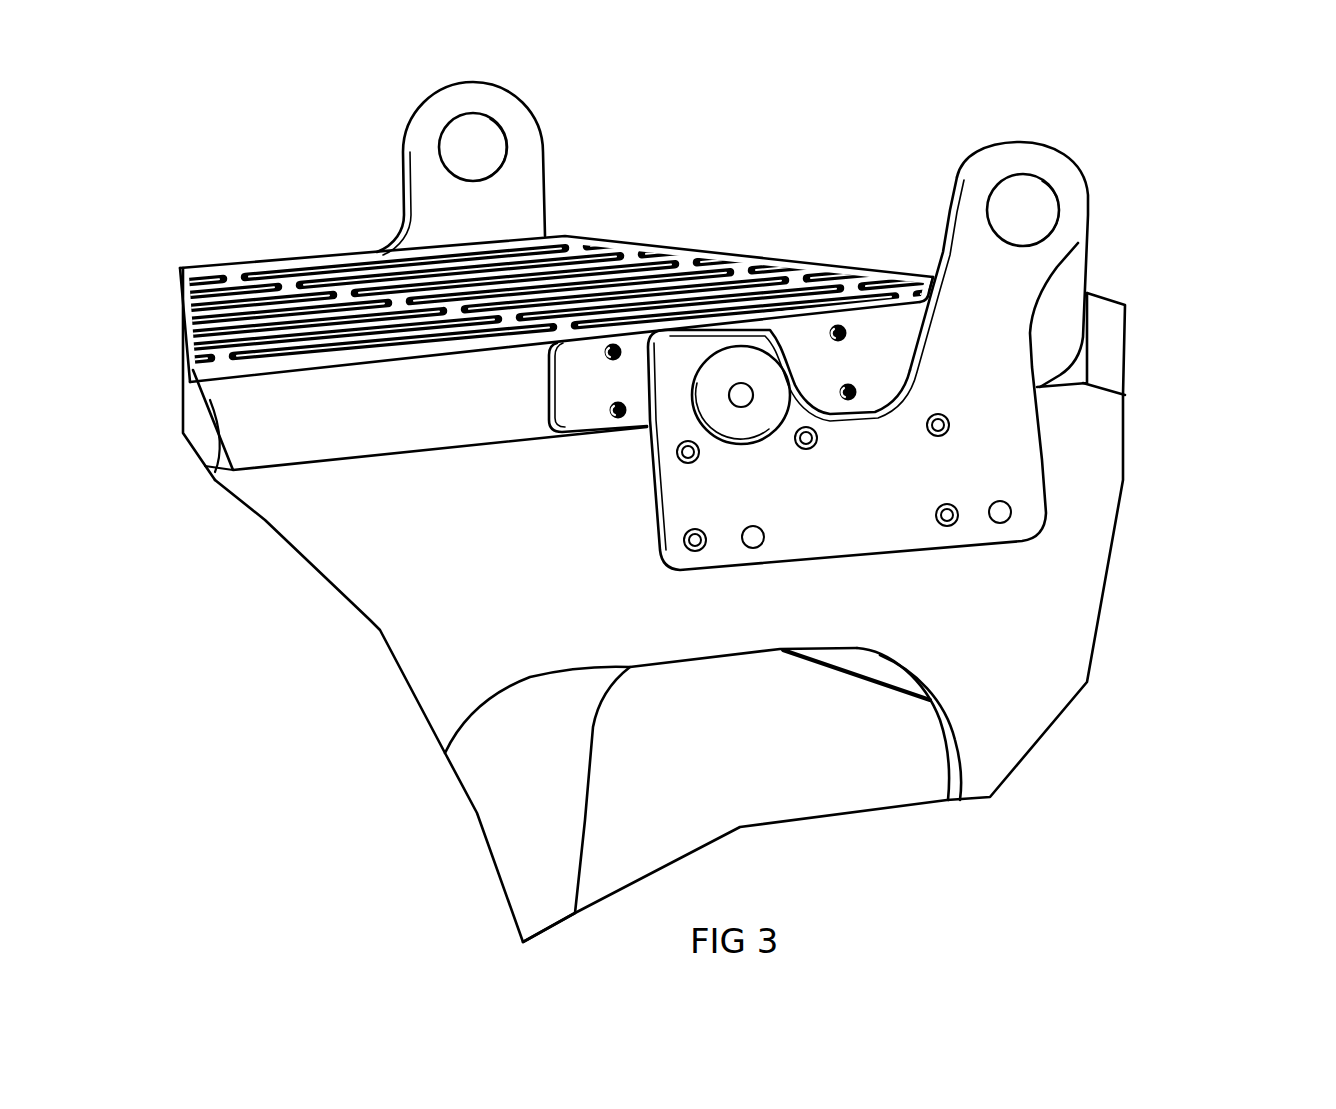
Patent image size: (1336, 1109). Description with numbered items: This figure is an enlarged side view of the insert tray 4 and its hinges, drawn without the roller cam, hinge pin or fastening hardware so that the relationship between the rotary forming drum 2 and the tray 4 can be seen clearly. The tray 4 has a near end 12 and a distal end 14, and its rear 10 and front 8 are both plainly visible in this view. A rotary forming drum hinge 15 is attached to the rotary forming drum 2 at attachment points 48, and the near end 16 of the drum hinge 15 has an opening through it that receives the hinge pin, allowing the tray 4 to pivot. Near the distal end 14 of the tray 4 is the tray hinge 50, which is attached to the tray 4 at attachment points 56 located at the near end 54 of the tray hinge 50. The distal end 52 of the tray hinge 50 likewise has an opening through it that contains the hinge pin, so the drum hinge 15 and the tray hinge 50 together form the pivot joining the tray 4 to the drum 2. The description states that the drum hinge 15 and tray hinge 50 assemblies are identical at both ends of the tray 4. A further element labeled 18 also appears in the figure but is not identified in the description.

The rotary forming drum 2 is at (1160, 533).
The insert tray 4 is at (617, 242).
The front 8 is at (213, 400).
The rear 10 is at (737, 250).
The near end 12 is at (318, 430).
The distal end 14 is at (297, 253).
The rotary forming drum hinge 15 is at (1030, 263).
The near end 16 is at (1017, 160).
The mounting bracket 18 is at (527, 143).
The attachment points 48 is at (690, 543).
The tray hinge 50 is at (893, 333).
The distal end 52 is at (957, 180).
The near end 54 is at (608, 390).
The attachment points 56 is at (840, 325).